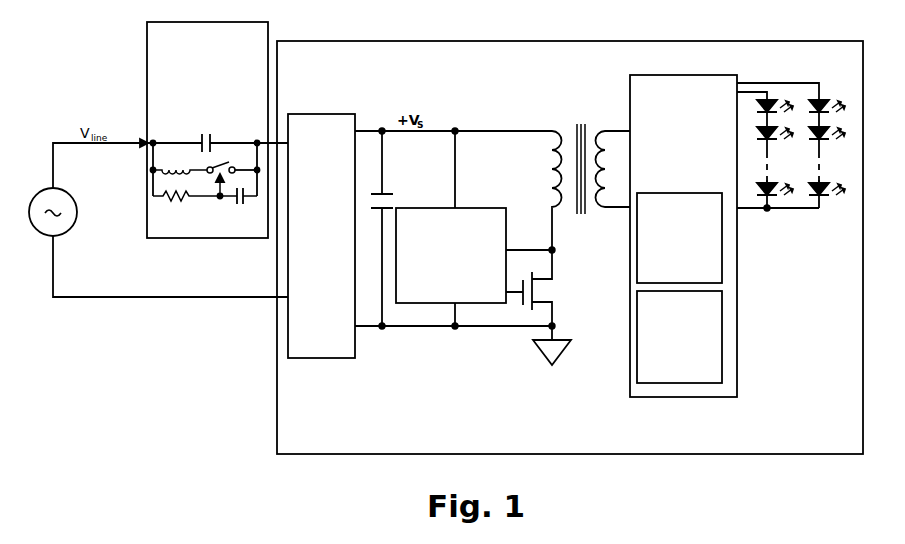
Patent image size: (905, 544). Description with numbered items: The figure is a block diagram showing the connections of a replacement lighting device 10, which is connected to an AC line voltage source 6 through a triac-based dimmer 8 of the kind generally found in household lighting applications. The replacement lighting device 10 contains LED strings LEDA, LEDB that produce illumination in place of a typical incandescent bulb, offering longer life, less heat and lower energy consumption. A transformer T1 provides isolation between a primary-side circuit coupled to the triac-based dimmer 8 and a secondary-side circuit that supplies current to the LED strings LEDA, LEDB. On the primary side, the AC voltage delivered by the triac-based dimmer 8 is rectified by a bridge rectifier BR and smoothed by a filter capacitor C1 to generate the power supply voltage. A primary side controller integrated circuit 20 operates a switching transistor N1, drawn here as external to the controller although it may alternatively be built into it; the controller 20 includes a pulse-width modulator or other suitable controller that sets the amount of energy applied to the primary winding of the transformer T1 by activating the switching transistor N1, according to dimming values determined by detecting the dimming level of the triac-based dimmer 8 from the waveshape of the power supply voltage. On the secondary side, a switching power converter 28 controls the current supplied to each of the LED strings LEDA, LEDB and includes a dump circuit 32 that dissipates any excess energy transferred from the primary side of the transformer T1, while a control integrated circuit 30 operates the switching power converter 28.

The AC line voltage source 6 is at (70, 190).
The triac-based dimmer 8 is at (217, 130).
The replacement lighting device 10 is at (570, 247).
The primary side controller integrated circuit 20 is at (451, 228).
The secondary-side switching power converter 28 is at (683, 236).
The control integrated circuit 30 is at (679, 238).
The dump circuit 32 is at (679, 337).
The bridge rectifier BR is at (321, 236).
The filter capacitor C1 is at (391, 228).
The transformer T1 is at (591, 174).
The switching transistor N1 is at (546, 306).
The LED string LEDA is at (765, 138).
The LED string LEDB is at (791, 137).